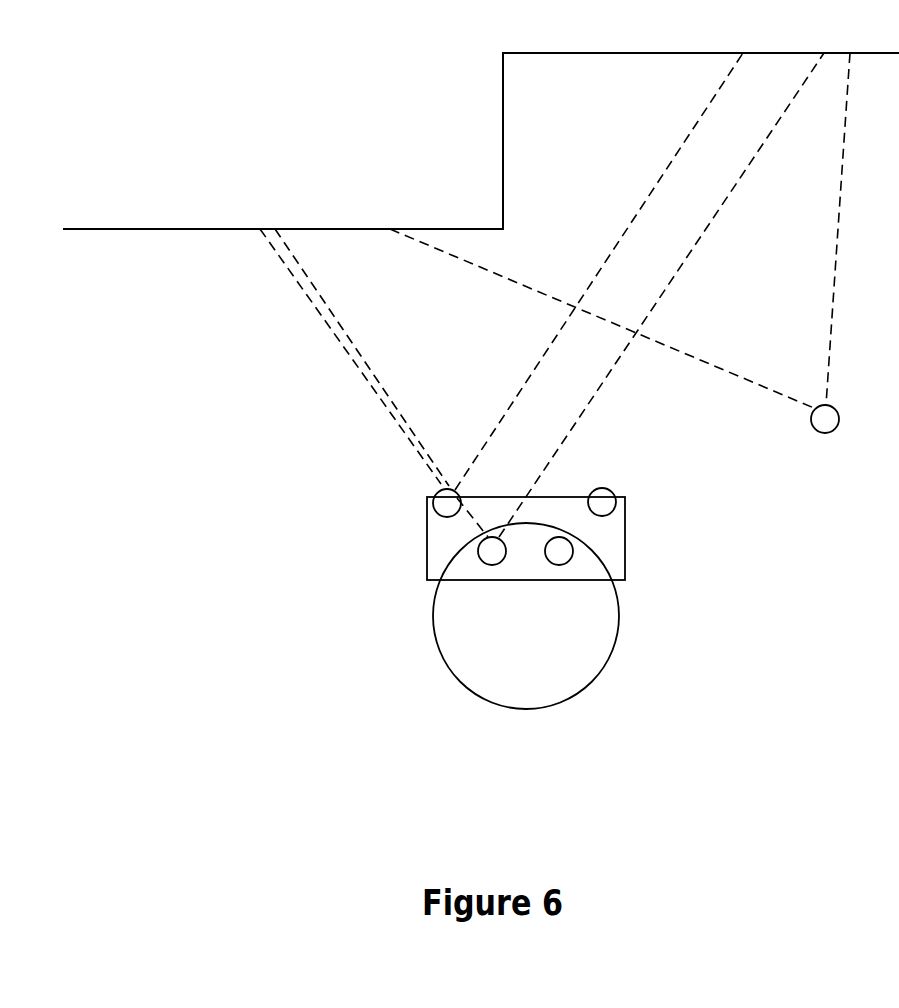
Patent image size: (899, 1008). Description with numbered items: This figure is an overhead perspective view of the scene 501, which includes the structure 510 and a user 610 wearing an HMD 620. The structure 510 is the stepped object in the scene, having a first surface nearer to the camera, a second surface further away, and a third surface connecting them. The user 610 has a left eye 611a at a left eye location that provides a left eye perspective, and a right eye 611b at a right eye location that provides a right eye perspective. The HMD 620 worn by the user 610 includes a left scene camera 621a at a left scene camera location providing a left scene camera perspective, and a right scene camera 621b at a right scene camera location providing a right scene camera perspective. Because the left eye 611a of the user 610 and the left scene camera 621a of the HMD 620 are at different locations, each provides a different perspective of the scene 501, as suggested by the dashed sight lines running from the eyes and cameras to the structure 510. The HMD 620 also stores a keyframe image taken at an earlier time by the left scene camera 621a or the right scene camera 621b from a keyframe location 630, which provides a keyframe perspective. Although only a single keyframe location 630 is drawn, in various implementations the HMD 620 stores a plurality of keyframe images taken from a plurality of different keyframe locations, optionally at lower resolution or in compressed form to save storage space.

The scene 501 is at (179, 38).
The structure 510 is at (188, 229).
The user 610 is at (434, 633).
The left eye 611a is at (485, 563).
The right eye 611b is at (565, 565).
The HMD 620 is at (427, 537).
The left scene camera 621a is at (433, 488).
The right scene camera 621b is at (617, 488).
The keyframe location 630 is at (840, 415).